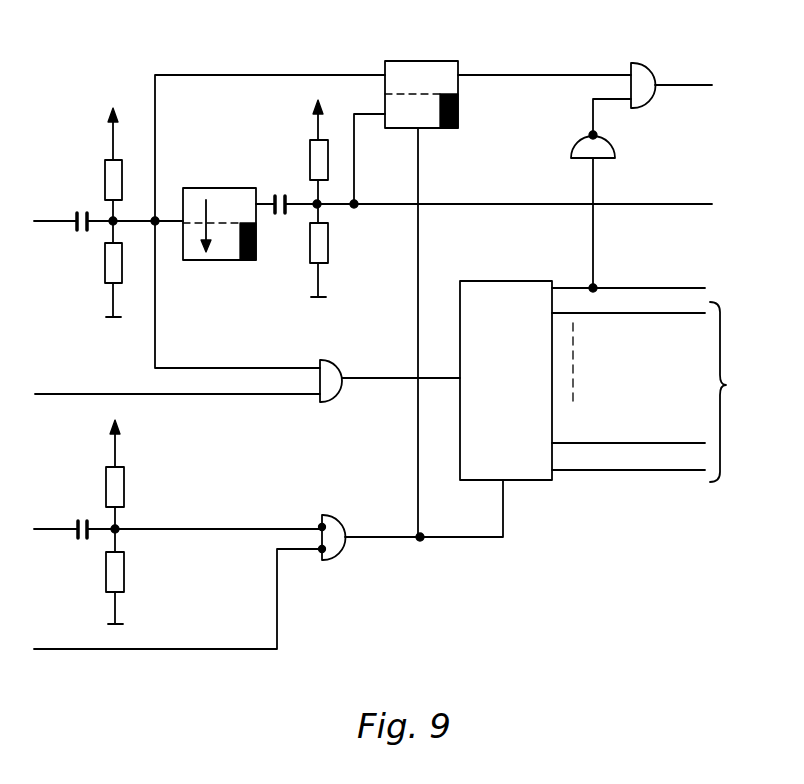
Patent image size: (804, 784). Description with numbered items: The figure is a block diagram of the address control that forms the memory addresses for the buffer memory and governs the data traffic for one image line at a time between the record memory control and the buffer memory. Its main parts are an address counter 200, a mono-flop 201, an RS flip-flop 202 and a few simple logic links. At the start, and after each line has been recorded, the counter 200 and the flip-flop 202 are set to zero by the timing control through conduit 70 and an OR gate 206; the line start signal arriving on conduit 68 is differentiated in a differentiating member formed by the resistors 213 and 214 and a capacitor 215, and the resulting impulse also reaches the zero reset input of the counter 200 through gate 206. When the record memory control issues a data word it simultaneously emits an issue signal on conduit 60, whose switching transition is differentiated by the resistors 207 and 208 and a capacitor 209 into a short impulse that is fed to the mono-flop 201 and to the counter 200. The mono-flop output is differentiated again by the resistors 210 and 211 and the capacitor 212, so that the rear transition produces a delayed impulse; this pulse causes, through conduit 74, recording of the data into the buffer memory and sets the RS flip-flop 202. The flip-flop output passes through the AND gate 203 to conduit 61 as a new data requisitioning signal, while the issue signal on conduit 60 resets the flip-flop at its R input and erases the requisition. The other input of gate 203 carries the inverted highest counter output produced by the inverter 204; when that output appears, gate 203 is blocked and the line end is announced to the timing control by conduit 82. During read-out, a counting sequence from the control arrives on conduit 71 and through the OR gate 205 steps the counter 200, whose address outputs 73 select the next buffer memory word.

The conduit 60 is at (50, 221).
The conduit 61 is at (682, 82).
The conduit 68 is at (40, 528).
The conduit 70 is at (68, 651).
The conduit 71 is at (60, 392).
The address outputs of the counter 73 is at (653, 392).
The conduit 74 is at (653, 202).
The conduit 82 is at (632, 288).
The address counter 200 is at (520, 468).
The mono-flop 201 is at (224, 264).
The RS flip-flop 202 is at (433, 72).
The AND gate 203 is at (640, 74).
The inverter 204 is at (584, 150).
The OR gate 205 is at (332, 384).
The OR gate 206 is at (336, 538).
The resistor 207 is at (110, 183).
The resistor 208 is at (108, 265).
The capacitor 209 is at (80, 234).
The resistor 210 is at (314, 167).
The resistor 211 is at (327, 246).
The capacitor 212 is at (286, 214).
The resistor 213 is at (118, 494).
The resistor 214 is at (124, 574).
The capacitor 215 is at (78, 535).